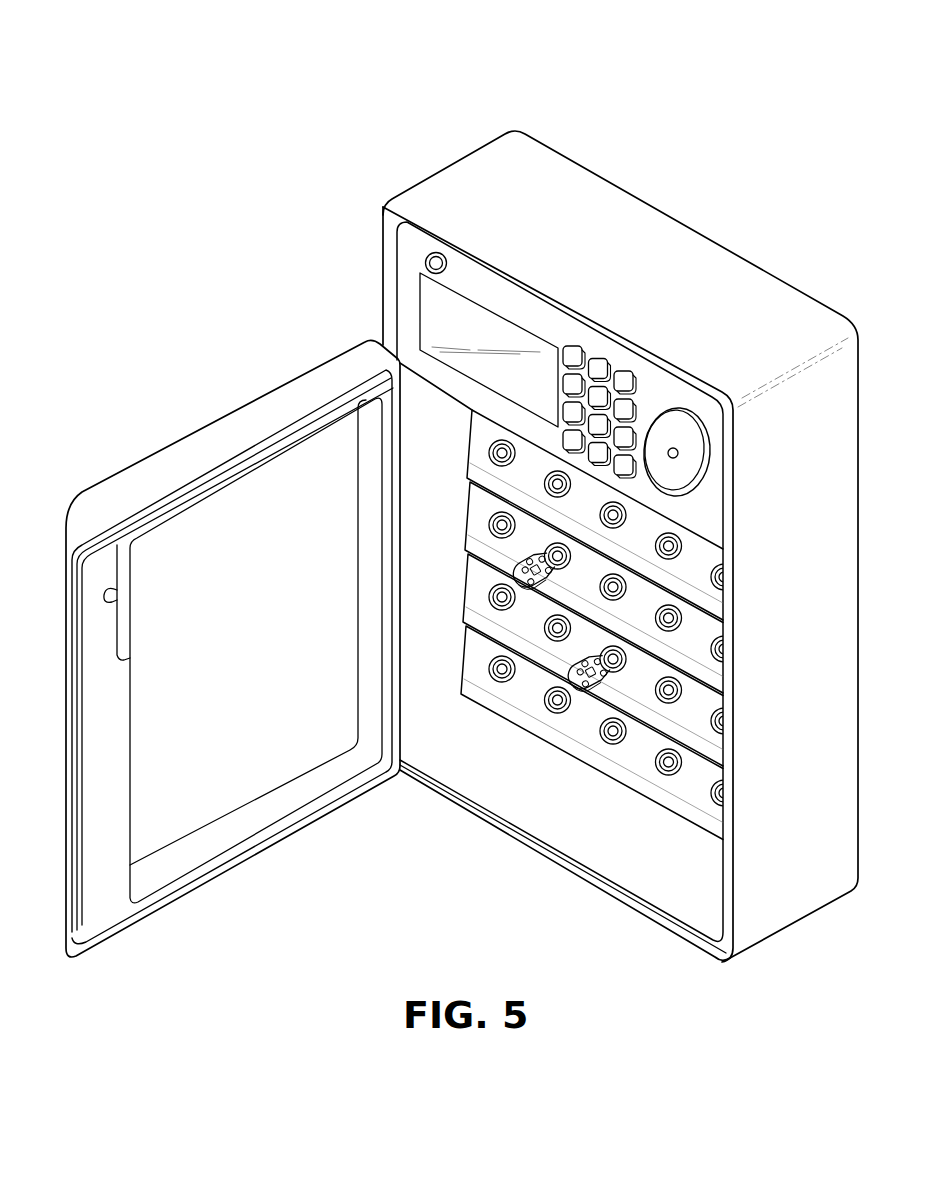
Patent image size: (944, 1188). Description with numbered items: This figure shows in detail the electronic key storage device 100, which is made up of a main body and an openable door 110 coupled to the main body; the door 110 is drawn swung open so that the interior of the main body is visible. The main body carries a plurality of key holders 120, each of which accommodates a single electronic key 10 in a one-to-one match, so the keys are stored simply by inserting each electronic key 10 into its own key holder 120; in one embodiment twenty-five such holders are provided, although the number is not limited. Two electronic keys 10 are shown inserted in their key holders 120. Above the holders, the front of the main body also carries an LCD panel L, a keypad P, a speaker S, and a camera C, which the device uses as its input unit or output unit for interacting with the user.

The electronic key storage device 100 is at (490, 39).
The openable door 110 is at (210, 423).
The key holder 120 is at (611, 747).
The electronic key 10 is at (583, 696).
The camera C is at (444, 255).
The LCD panel L is at (513, 337).
The keypad P is at (597, 353).
The speaker S is at (672, 432).